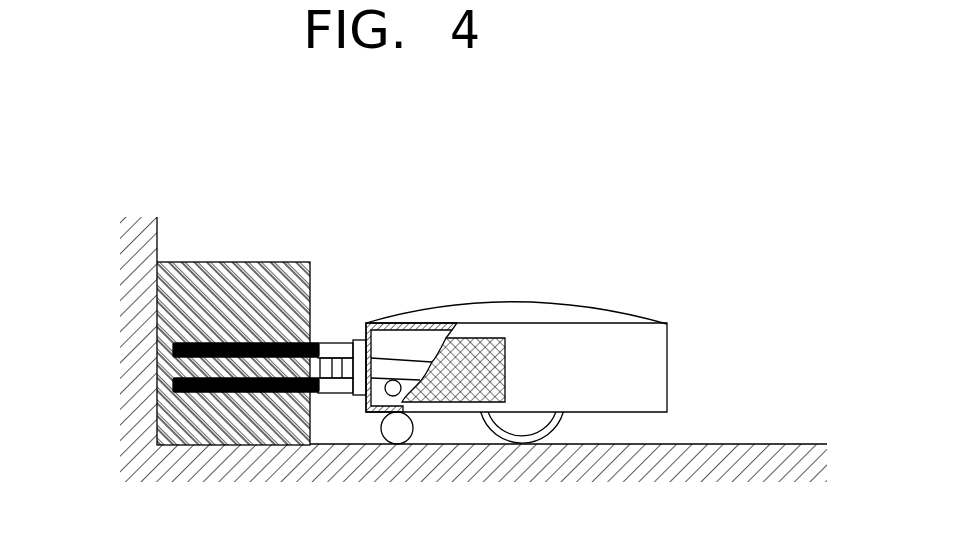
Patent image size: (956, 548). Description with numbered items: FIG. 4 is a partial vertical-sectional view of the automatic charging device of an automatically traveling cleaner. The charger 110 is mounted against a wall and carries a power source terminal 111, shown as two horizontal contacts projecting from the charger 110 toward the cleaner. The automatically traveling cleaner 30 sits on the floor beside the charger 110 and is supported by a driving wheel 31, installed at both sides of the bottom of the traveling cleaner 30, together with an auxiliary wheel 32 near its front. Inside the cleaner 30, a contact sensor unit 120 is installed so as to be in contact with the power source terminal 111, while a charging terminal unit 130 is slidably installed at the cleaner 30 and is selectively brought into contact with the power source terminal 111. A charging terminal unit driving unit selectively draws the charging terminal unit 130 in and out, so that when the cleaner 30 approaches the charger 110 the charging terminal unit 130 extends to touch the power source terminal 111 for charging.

The charger 110 is at (250, 273).
The power source terminal 111 is at (227, 357).
The charging terminal unit 130 is at (338, 334).
The contact sensor unit 120 is at (465, 352).
The automatically traveling cleaner 30 is at (634, 316).
The driving wheel 31 is at (527, 437).
The auxiliary wheel 32 is at (393, 432).